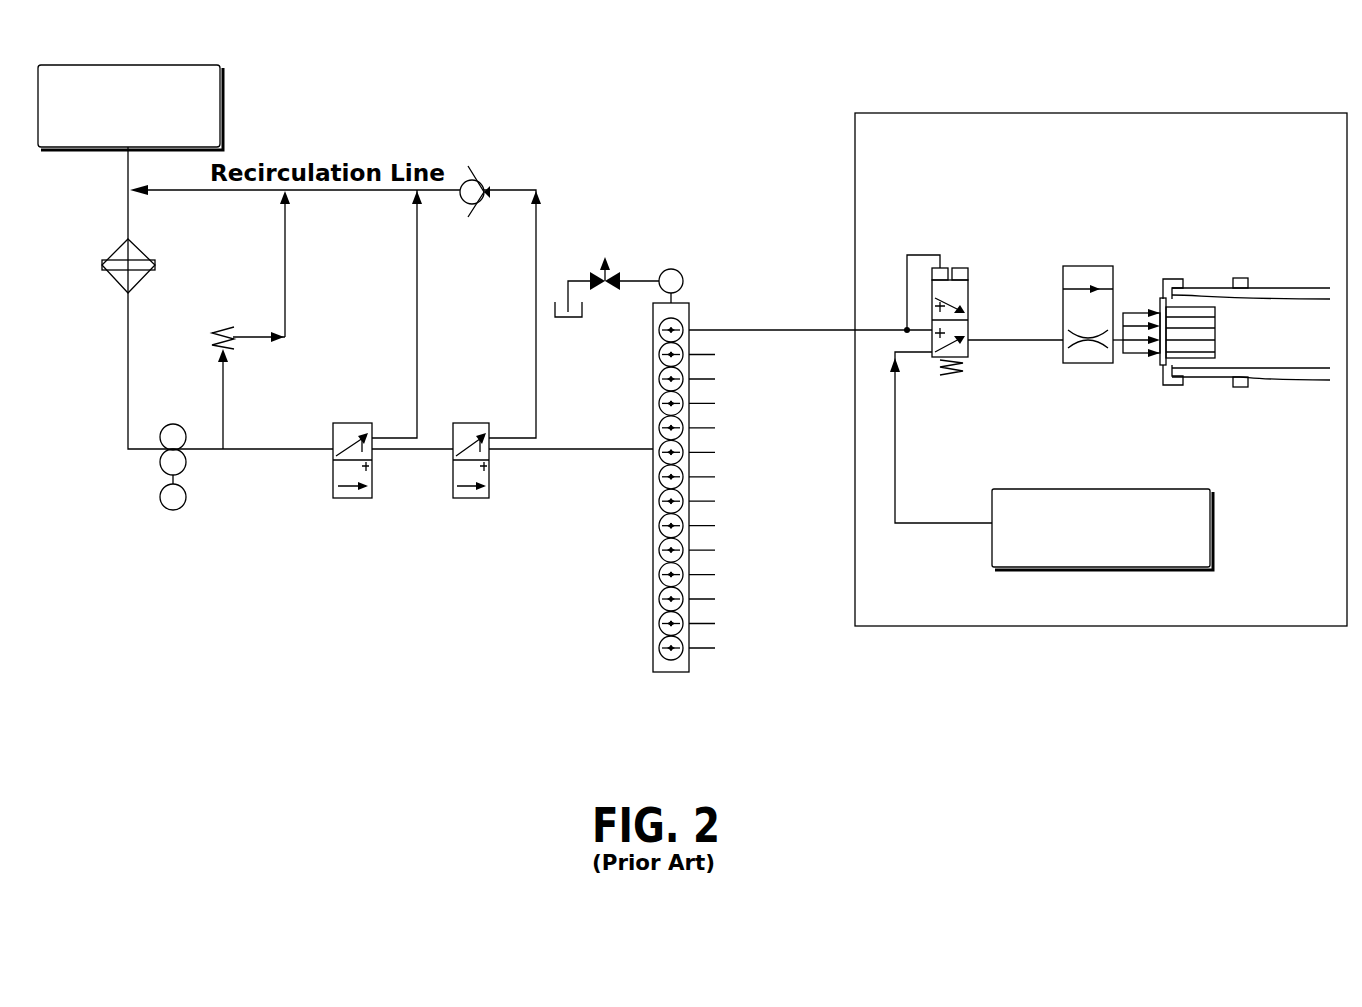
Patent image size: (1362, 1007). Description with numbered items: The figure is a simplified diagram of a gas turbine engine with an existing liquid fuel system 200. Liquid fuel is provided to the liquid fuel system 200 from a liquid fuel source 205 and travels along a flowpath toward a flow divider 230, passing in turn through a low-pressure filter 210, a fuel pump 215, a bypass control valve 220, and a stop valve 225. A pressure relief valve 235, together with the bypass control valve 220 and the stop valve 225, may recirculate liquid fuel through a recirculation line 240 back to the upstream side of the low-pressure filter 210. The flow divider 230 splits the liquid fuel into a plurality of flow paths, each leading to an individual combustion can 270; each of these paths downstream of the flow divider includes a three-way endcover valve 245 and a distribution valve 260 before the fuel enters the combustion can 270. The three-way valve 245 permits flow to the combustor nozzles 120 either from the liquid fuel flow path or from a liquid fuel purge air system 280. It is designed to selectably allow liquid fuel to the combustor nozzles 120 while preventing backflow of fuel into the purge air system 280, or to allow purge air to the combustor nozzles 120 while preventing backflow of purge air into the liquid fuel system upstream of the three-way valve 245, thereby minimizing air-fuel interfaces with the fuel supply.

The liquid fuel system 200 is at (745, 103).
The liquid fuel source 205 is at (222, 108).
The low-pressure filter 210 is at (118, 281).
The fuel pump 215 is at (184, 507).
The bypass control valve 220 is at (333, 477).
The stop valve 225 is at (453, 482).
The flow divider 230 is at (653, 605).
The pressure relief valve 235 is at (213, 333).
The recirculation line 240 is at (480, 180).
The three-way valve 245 is at (968, 288).
The distribution valve 260 is at (1117, 277).
The combustion can 270 is at (1225, 408).
The combustor nozzles 120 is at (1240, 328).
The liquid fuel purge air system 280 is at (1187, 568).